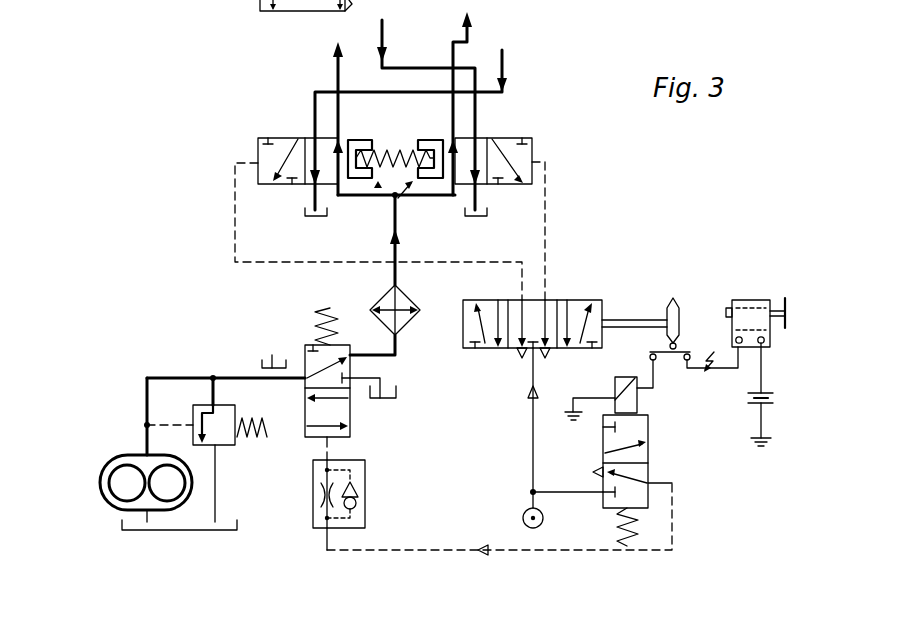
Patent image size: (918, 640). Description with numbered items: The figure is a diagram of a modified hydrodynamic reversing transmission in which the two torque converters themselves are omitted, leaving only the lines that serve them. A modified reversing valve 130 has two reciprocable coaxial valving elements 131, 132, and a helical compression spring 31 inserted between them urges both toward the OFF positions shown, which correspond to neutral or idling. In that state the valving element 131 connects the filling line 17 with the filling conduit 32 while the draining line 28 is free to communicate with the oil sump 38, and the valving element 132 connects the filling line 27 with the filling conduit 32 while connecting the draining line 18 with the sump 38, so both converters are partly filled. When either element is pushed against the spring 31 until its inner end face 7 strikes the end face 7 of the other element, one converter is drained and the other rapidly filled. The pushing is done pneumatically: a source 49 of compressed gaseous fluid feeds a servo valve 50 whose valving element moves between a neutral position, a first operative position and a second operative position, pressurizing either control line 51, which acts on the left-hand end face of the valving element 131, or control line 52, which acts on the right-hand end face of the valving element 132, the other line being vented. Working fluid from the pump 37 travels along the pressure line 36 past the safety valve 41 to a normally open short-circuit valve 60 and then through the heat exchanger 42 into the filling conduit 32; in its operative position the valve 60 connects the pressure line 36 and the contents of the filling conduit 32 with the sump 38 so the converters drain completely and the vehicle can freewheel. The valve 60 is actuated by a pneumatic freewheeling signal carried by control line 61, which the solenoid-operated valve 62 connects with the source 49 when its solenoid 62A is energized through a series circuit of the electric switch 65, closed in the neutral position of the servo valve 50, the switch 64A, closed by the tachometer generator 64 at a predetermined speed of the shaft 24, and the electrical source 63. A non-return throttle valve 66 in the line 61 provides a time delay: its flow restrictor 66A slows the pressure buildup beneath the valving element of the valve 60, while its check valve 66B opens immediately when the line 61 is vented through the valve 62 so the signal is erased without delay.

The inner end face 7 is at (380, 184).
The filling line 17 is at (335, 55).
The draining line 18 is at (380, 38).
The shaft 24 is at (773, 312).
The filling line 27 is at (471, 38).
The draining line 28 is at (508, 70).
The helical compression spring 31 is at (378, 150).
The filling conduit 32 is at (399, 207).
The pressure line 36 is at (398, 345).
The pump 37 is at (100, 527).
The oil sump 38 is at (320, 216).
The safety valve 41 is at (226, 439).
The heat exchanger 42 is at (404, 300).
The source of compressed gaseous fluid 49 is at (525, 512).
The servo valve 50 is at (573, 308).
The control line 51 is at (233, 228).
The control line 52 is at (546, 203).
The short-circuit valve 60 is at (343, 408).
The control line 61 is at (403, 549).
The solenoid-operated valve 62 is at (633, 430).
The solenoid 62A is at (620, 390).
The source of electrical energy 63 is at (768, 393).
The tachometer generator 64 is at (745, 307).
The switch 64A is at (753, 346).
The electric switch 65 is at (678, 354).
The non-return throttle valve 66 is at (371, 468).
The flow restrictor 66A is at (322, 494).
The check valve 66B is at (358, 497).
The reversing valve 130 is at (541, 120).
The valving element 131 is at (262, 154).
The valving element 132 is at (523, 157).